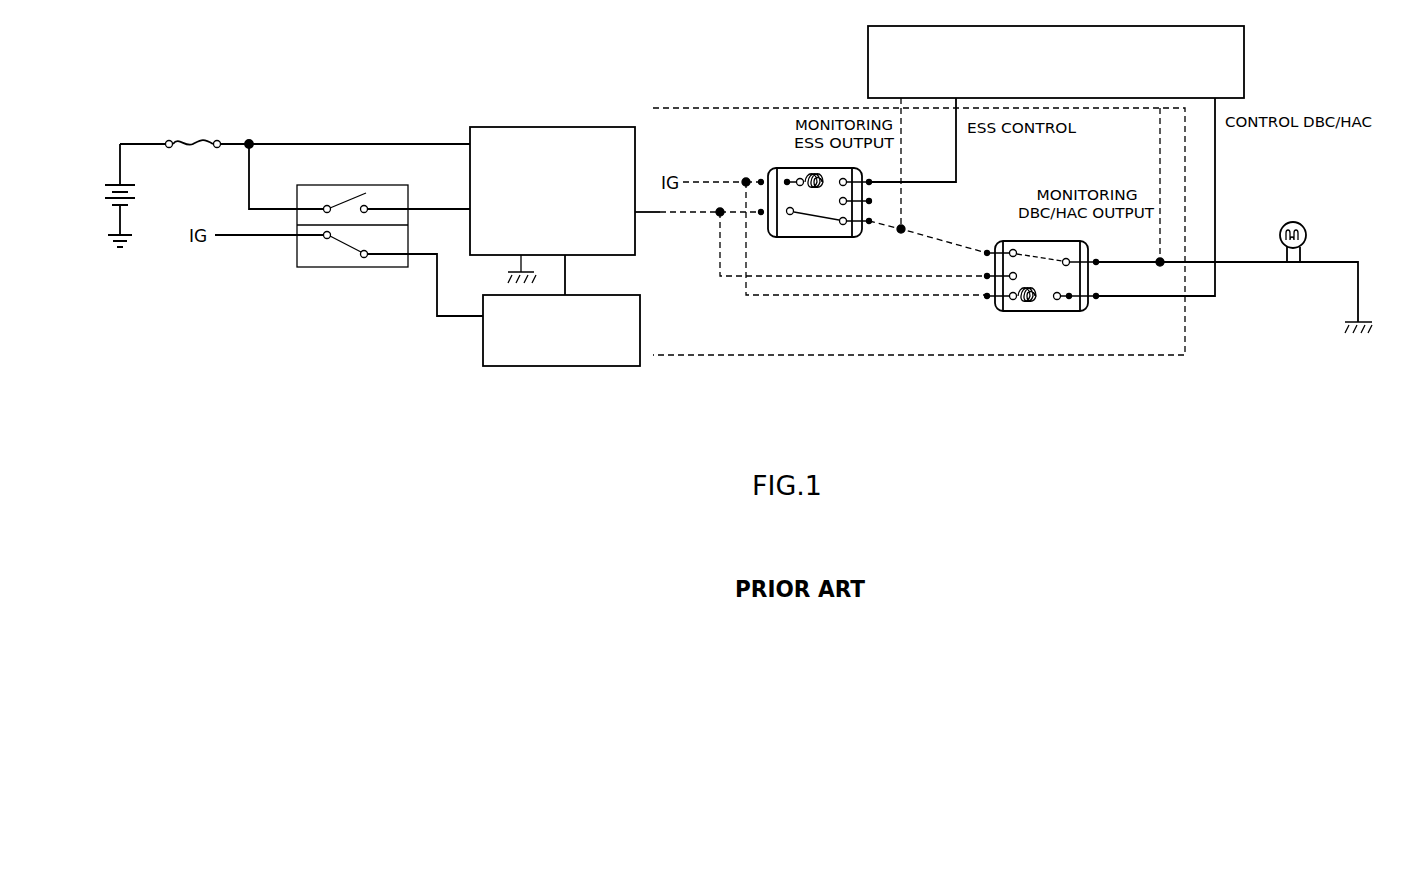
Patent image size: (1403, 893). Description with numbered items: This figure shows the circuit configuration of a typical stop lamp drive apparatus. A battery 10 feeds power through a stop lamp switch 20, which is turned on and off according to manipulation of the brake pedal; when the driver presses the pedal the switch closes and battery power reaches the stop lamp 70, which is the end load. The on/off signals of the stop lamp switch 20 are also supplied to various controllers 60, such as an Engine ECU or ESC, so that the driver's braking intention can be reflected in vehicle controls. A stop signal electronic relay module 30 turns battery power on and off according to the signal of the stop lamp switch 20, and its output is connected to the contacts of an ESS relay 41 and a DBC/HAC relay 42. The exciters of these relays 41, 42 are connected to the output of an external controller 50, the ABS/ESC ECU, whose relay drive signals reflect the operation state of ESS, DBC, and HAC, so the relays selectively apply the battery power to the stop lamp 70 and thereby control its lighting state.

The battery 10 is at (135, 190).
The stop lamp switch 20 is at (348, 267).
The stop signal electronic relay module 30 is at (555, 127).
The ESS relay 41 is at (788, 168).
The DBC/HAC relay 42 is at (1020, 241).
The external controller (ABS/ESC ECU) 50 is at (1244, 62).
The controllers 60 is at (558, 366).
The stop lamp 70 is at (1306, 230).